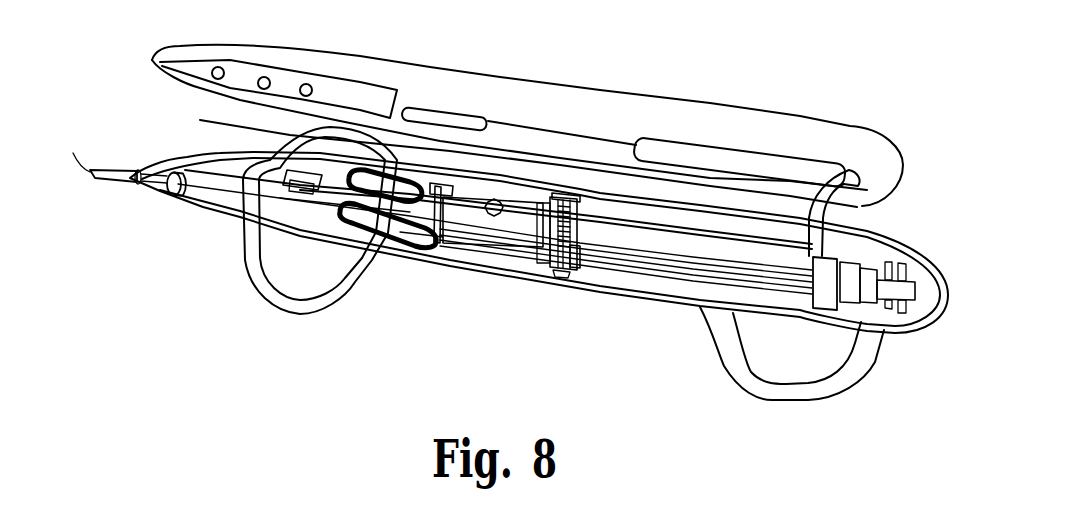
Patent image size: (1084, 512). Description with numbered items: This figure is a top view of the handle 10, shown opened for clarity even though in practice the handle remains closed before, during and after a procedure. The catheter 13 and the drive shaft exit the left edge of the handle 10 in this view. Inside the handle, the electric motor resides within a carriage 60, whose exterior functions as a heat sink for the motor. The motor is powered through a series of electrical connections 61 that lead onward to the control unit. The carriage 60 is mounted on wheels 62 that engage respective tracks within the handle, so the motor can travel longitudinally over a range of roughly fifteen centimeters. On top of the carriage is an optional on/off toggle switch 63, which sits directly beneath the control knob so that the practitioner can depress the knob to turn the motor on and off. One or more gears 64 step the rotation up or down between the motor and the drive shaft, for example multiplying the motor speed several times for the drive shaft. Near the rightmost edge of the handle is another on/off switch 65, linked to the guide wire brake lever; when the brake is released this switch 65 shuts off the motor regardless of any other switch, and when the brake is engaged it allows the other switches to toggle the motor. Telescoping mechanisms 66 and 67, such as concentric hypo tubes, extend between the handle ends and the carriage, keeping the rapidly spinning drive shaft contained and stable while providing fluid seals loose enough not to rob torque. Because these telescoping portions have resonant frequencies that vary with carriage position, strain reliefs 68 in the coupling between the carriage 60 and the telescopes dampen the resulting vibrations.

The handle 10 is at (822, 130).
The catheter 13 is at (108, 168).
The carriage 60 is at (507, 245).
The electrical connections 61 is at (357, 247).
The wheels 62 is at (528, 258).
The on/off toggle switch 63 is at (494, 217).
The gears 64 is at (564, 198).
The on/off switch 65 is at (882, 308).
The telescoping mechanism 66 is at (285, 178).
The telescoping mechanism 67 is at (643, 260).
The strain reliefs 68 is at (575, 255).